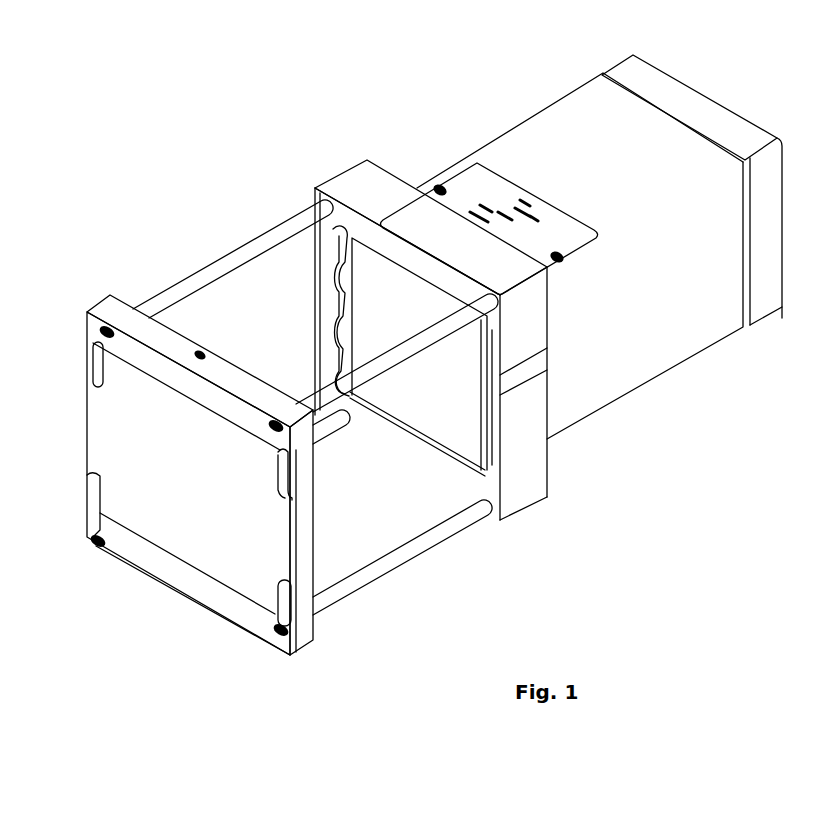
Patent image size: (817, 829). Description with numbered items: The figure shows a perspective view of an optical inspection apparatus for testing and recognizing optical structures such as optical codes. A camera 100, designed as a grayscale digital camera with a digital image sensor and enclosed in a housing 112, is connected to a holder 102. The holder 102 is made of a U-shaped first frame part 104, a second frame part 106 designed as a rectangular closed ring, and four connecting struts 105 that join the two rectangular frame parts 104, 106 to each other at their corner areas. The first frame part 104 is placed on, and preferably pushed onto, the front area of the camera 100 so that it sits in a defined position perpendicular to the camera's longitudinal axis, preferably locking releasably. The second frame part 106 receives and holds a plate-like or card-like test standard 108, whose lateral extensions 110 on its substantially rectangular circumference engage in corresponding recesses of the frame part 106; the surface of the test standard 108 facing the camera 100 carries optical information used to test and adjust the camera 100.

The camera 100 is at (463, 80).
The holder 102 is at (204, 208).
The first frame part 104 is at (518, 492).
The connecting struts 105 is at (267, 237).
The second frame part 106 is at (303, 633).
The test standard 108 is at (187, 548).
The lateral extensions 110 is at (90, 430).
The housing 112 is at (632, 372).